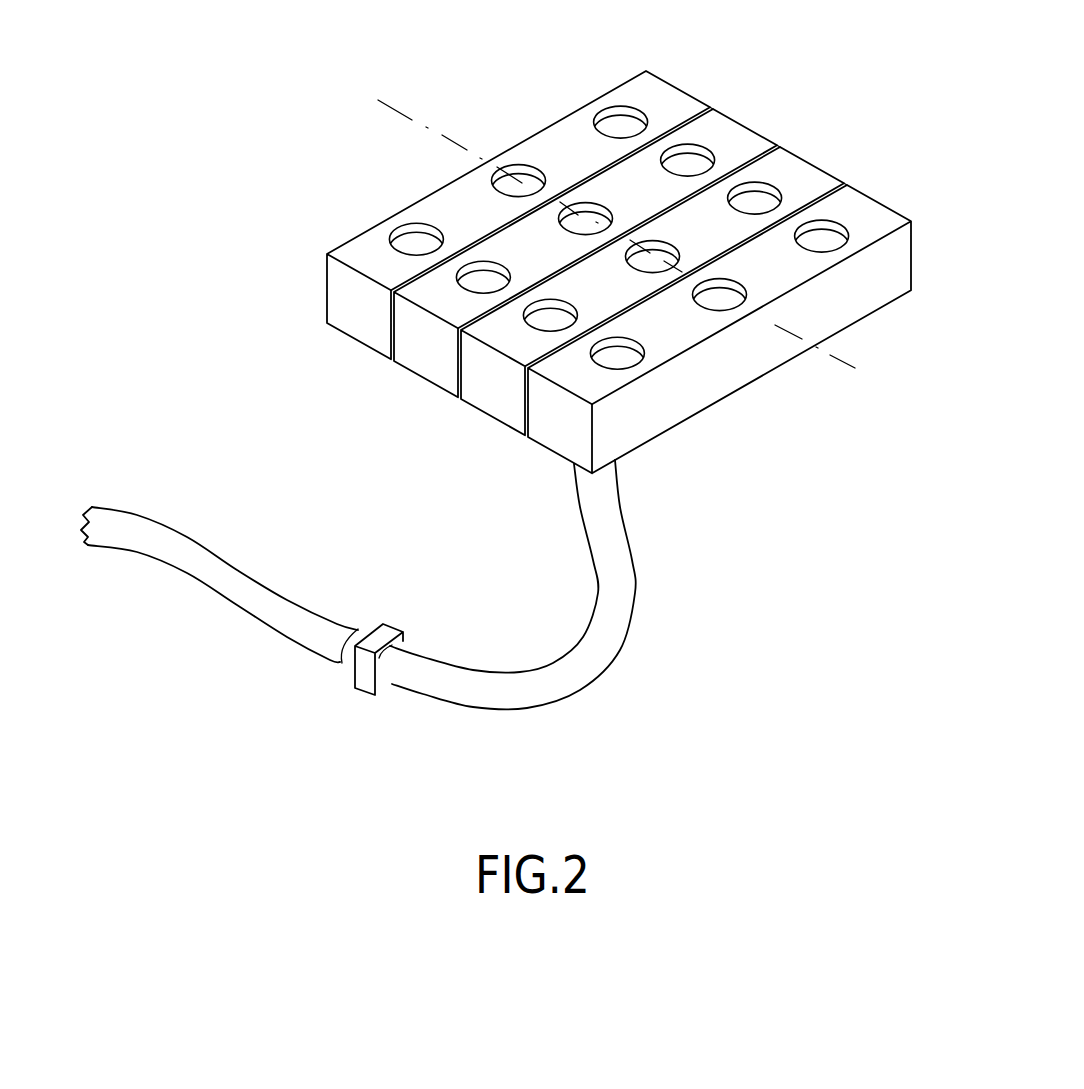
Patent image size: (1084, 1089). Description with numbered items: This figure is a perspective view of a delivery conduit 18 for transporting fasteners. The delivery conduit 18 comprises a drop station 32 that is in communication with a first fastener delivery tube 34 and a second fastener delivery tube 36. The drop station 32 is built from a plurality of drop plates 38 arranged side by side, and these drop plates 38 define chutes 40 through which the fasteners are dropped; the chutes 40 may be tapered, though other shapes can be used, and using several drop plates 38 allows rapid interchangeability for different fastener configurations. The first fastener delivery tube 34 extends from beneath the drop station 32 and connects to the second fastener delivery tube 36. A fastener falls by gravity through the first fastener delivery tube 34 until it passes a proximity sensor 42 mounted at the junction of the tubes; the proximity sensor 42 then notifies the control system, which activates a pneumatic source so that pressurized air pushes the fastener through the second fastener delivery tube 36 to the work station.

The delivery conduit 18 is at (499, 357).
The drop station 32 is at (604, 243).
The first fastener delivery tube 34 is at (625, 566).
The second fastener delivery tube 36 is at (204, 570).
The drop plates 38 is at (563, 431).
The chutes 40 is at (477, 277).
The proximity sensor 42 is at (382, 632).